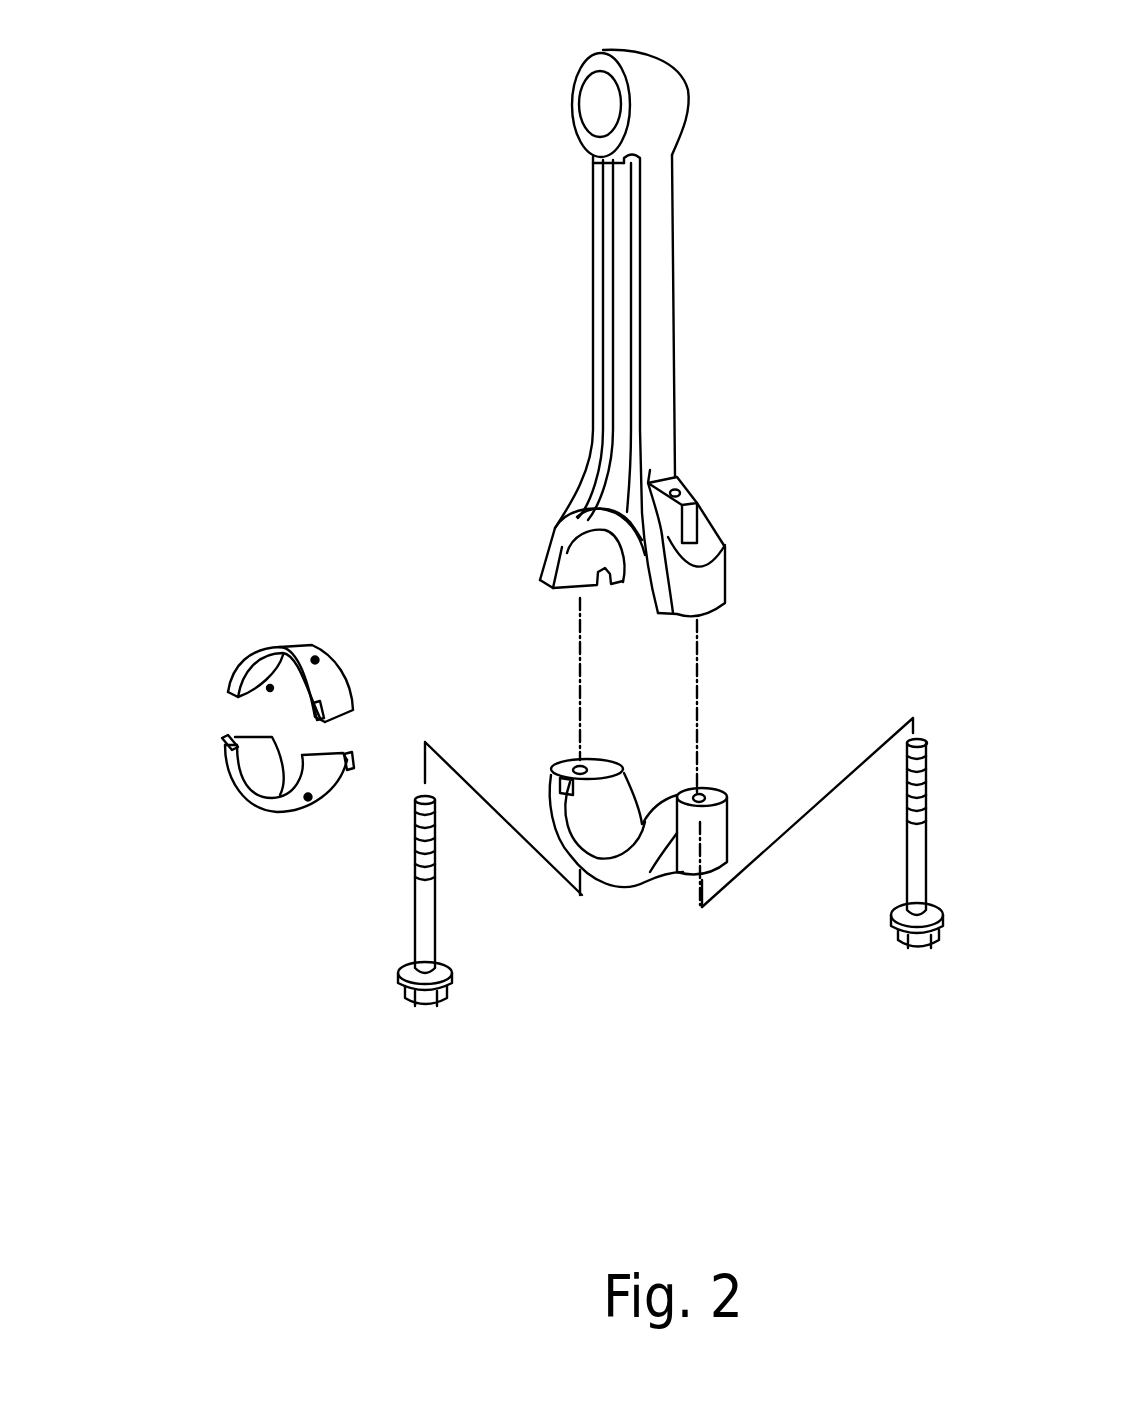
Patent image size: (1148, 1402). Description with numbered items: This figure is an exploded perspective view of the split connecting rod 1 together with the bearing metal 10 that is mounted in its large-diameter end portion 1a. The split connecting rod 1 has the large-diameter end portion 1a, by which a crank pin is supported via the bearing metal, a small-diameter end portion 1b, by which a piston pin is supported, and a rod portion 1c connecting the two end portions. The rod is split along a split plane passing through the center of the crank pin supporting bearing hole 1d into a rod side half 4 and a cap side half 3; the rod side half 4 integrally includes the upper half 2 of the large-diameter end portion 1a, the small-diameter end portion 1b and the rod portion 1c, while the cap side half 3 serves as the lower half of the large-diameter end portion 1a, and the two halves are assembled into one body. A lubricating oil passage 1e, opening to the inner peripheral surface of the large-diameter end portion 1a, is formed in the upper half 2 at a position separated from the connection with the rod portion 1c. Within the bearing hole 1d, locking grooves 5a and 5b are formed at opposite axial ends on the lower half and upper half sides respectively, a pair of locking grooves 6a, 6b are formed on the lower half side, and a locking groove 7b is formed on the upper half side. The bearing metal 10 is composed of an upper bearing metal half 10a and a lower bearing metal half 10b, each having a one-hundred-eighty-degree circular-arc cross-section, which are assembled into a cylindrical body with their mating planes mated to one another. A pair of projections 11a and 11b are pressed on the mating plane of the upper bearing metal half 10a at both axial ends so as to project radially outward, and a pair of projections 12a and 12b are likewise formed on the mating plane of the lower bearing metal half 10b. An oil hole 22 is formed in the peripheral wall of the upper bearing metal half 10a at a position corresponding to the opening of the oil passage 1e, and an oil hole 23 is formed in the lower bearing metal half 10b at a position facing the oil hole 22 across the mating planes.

The split connecting rod 1 is at (478, 262).
The large-diameter end portion 1a is at (826, 570).
The small-diameter end portion 1b is at (693, 97).
The rod portion 1c is at (676, 367).
The crank pin supporting bearing hole 1d is at (567, 556).
The lubricating oil passage 1e is at (683, 495).
The upper half of the large-diameter end portion 2 is at (727, 582).
The cap side half 3 is at (733, 800).
The rod side half 4 is at (676, 291).
The locking groove 5a is at (557, 765).
The locking groove 5b is at (578, 589).
The locking groove 6a is at (713, 793).
The locking groove 6b is at (686, 792).
The locking groove 7b is at (645, 592).
The bearing metal 10 is at (140, 643).
The upper bearing metal half 10a is at (233, 670).
The lower bearing metal half 10b is at (235, 800).
The projection 11a is at (272, 692).
The projection 11b is at (322, 705).
The projection 12a is at (221, 744).
The projection 12b is at (352, 770).
The oil hole 22 is at (316, 658).
The oil hole 23 is at (307, 800).